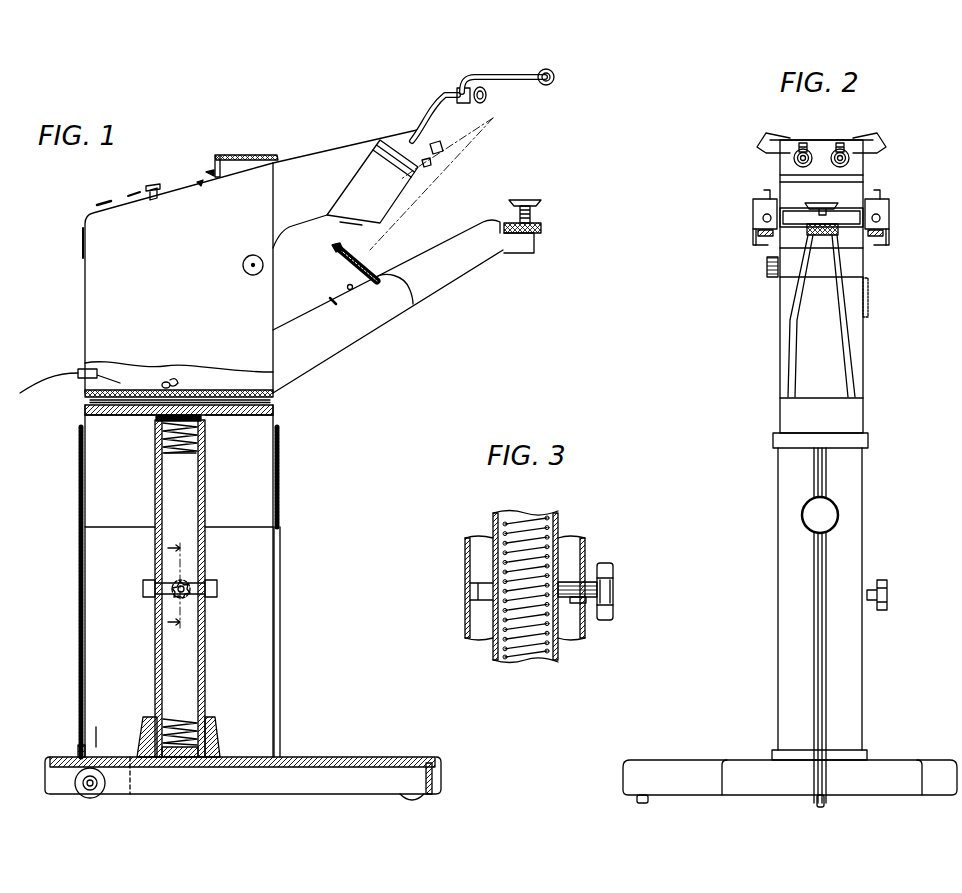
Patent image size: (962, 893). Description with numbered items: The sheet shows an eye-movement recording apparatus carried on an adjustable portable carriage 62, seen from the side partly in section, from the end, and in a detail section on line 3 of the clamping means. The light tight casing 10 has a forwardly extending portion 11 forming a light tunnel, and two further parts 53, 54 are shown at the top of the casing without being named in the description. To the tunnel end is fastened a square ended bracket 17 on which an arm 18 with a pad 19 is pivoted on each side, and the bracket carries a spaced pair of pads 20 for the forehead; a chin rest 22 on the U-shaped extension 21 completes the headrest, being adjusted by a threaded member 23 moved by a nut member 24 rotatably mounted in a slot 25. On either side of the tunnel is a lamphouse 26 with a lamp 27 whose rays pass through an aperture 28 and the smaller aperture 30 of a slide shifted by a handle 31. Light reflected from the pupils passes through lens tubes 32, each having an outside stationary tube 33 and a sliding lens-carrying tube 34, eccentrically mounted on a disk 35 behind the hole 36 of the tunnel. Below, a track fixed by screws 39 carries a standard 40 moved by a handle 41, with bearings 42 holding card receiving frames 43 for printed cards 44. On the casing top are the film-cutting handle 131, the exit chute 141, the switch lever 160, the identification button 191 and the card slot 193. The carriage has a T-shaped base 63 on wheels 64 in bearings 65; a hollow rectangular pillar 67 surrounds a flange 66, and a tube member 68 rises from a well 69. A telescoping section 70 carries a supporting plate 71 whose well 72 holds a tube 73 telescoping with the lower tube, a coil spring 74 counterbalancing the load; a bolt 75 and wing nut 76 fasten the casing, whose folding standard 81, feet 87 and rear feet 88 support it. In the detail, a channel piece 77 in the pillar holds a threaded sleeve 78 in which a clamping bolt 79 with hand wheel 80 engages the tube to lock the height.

In FIG. 1, the light tight casing 10 is at (100, 290).
In FIG. 1, the forwardly extending portion (light tunnel) 11 is at (300, 160).
In FIG. 1, the square ended bracket 17 is at (438, 108).
In FIG. 2, the square ended bracket 17 is at (880, 148).
In FIG. 1, the arm 18 is at (480, 77).
In FIG. 1, the pad 19 is at (541, 73).
In FIG. 1, the pads 20 is at (488, 96).
In FIG. 1, the U-shaped extension 21 is at (352, 333).
In FIG. 2, the U-shaped extension 21 is at (790, 330).
In FIG. 1, the chin rest 22 is at (532, 197).
In FIG. 2, the chin rest 22 is at (838, 205).
In FIG. 1, the threaded member 23 is at (518, 208).
In FIG. 1, the nut member 24 is at (541, 226).
In FIG. 1, the slot 25 is at (536, 242).
In FIG. 1, the lamphouse 26 is at (367, 227).
In FIG. 2, the lamphouse 26 is at (757, 233).
In FIG. 2, the lamp 27 is at (760, 240).
In FIG. 2, the aperture 28 is at (760, 218).
In FIG. 2, the aperture 30 is at (764, 209).
In FIG. 1, the handle 31 is at (362, 190).
In FIG. 2, the handle 31 is at (766, 197).
In FIG. 1, the lens tube 32 is at (419, 163).
In FIG. 2, the lens tube 32 is at (838, 151).
In FIG. 1, the outside stationary tube 33 is at (427, 166).
In FIG. 1, the tube carrying the lens 34 is at (444, 150).
In FIG. 2, the disk 35 is at (796, 164).
In FIG. 2, the hole 36 is at (772, 138).
In FIG. 1, the screws 39 is at (330, 300).
In FIG. 1, the standard 40 is at (335, 248).
In FIG. 1, the handle 41 is at (347, 287).
In FIG. 1, the bearings 42 is at (413, 302).
In FIG. 1, the card receiving frames 43 is at (365, 265).
In FIG. 2, the printed cards 44 is at (863, 268).
In FIG. 1, the top bracket 53 is at (217, 160).
In FIG. 1, the top panel strip 54 is at (246, 156).
In FIG. 1, the portable carriage 62 is at (78, 468).
In FIG. 2, the portable carriage 62 is at (785, 540).
In FIG. 1, the T-shaped base 63 is at (372, 760).
In FIG. 2, the T-shaped base 63 is at (685, 735).
In FIG. 1, the wheels 64 is at (77, 780).
In FIG. 2, the wheels 64 is at (640, 800).
In FIG. 1, the bearings 65 is at (77, 757).
In FIG. 1, the flange 66 is at (100, 727).
In FIG. 1, the hollow rectangular pillar 67 is at (80, 676).
In FIG. 3, the hollow rectangular pillar 67 is at (468, 622).
In FIG. 2, the hollow rectangular pillar 67 is at (787, 477).
In FIG. 1, the tube member 68 is at (155, 672).
In FIG. 3, the tube member 68 is at (493, 650).
In FIG. 1, the well 69 is at (205, 720).
In FIG. 1, the hollow rectangular section 70 is at (82, 513).
In FIG. 2, the hollow rectangular section 70 is at (785, 413).
In FIG. 1, the supporting plate 71 is at (85, 412).
In FIG. 1, the well 72 is at (200, 420).
In FIG. 1, the tube 73 is at (160, 440).
In FIG. 3, the tube 73 is at (548, 655).
In FIG. 1, the coil spring 74 is at (178, 455).
In FIG. 1, the bolt 75 is at (165, 380).
In FIG. 1, the wing nut 76 is at (177, 380).
In FIG. 1, the channel piece 77 is at (152, 596).
In FIG. 3, the channel piece 77 is at (478, 583).
In FIG. 3, the threaded sleeve 78 is at (572, 583).
In FIG. 3, the clamping bolt 79 is at (573, 603).
In FIG. 1, the hand wheel 80 is at (192, 580).
In FIG. 3, the hand wheel 80 is at (612, 590).
In FIG. 2, the hand wheel 80 is at (890, 596).
In FIG. 1, the standard 81 is at (278, 397).
In FIG. 1, the feet 87 is at (278, 413).
In FIG. 1, the feet 88 is at (90, 401).
In FIG. 1, the handle 131 is at (132, 194).
In FIG. 1, the chute 141 is at (105, 205).
In FIG. 1, the lever 160 is at (152, 186).
In FIG. 1, the button 191 is at (208, 170).
In FIG. 1, the slot 193 is at (199, 183).
In FIG. 1, the section line 3 is at (179, 587).